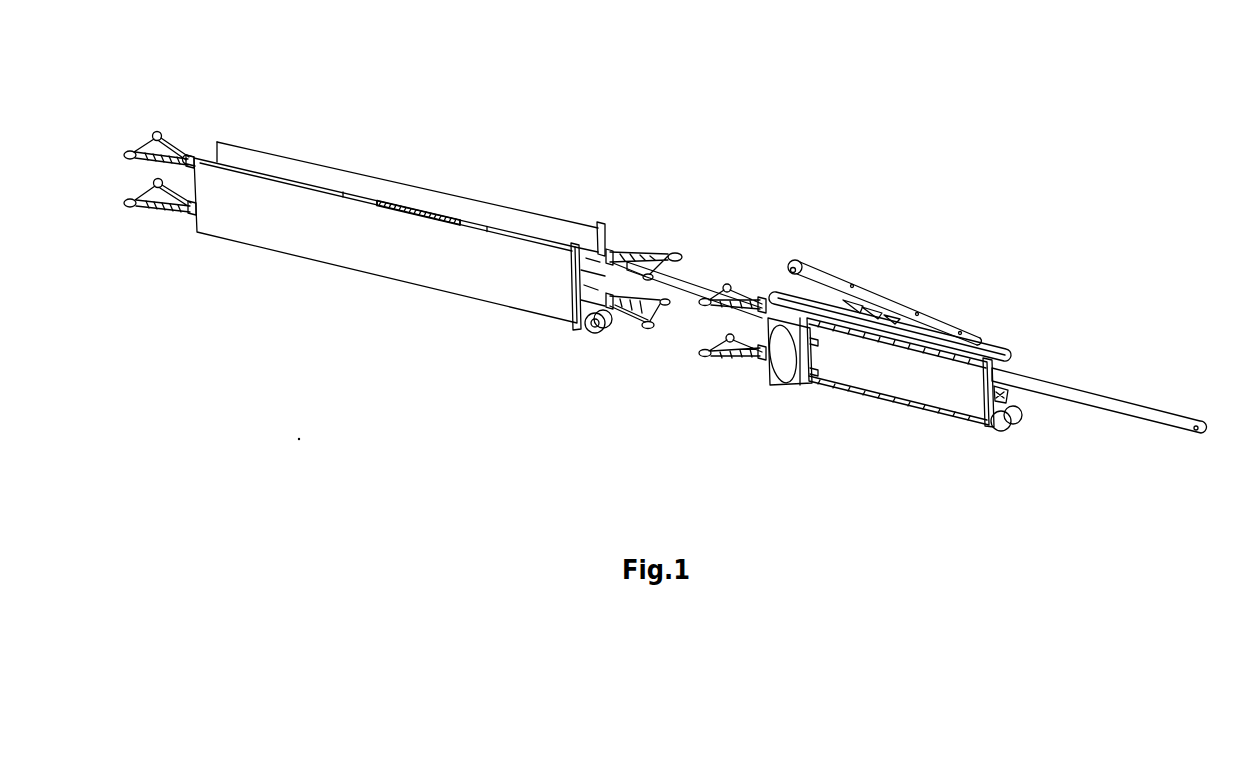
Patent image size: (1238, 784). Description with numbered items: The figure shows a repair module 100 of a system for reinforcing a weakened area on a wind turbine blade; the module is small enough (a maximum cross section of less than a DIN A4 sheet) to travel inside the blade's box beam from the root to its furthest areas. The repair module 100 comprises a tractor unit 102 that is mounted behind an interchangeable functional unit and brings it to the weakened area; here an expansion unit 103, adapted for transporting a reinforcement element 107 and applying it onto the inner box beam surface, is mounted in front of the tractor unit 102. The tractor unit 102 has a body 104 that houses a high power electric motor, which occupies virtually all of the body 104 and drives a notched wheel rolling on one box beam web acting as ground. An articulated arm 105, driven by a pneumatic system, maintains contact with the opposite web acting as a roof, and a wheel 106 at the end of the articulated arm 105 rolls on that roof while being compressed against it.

The repair module 100 is at (689, 182).
The tractor unit 102 is at (889, 413).
The expansion unit 103 is at (356, 304).
The body 104 is at (936, 385).
The articulated arm 105 is at (923, 305).
The wheel 106 is at (815, 257).
The reinforcement element 107 is at (455, 197).